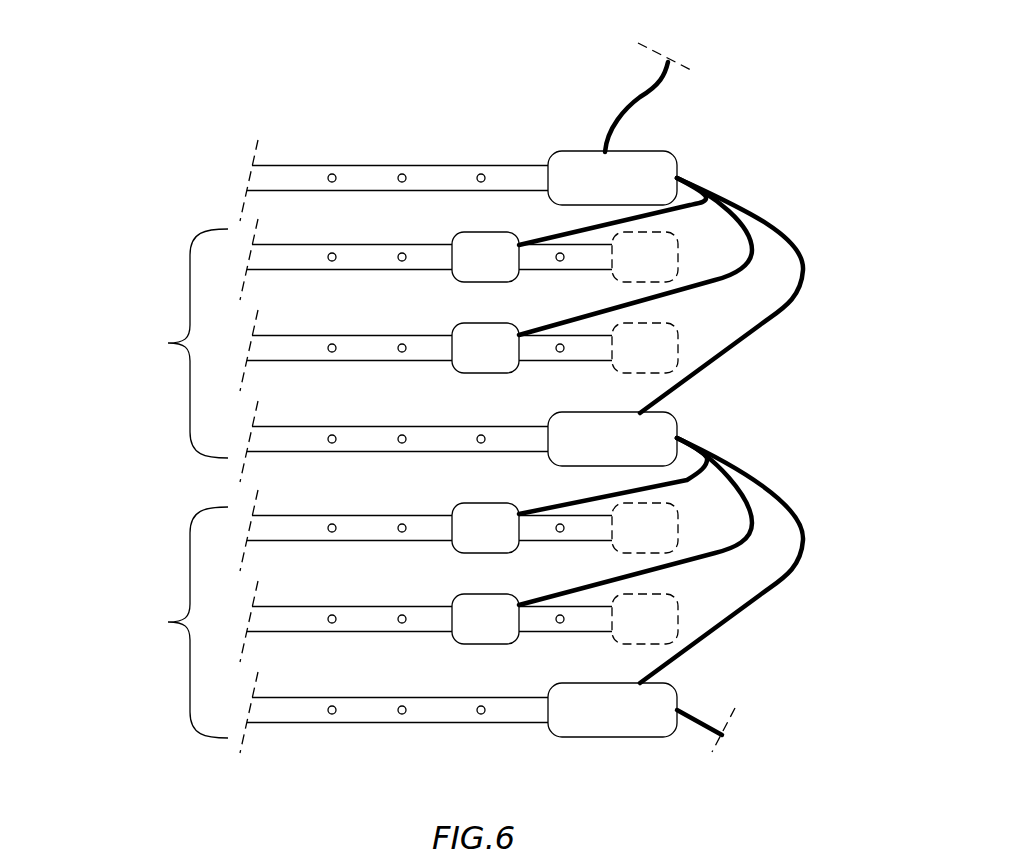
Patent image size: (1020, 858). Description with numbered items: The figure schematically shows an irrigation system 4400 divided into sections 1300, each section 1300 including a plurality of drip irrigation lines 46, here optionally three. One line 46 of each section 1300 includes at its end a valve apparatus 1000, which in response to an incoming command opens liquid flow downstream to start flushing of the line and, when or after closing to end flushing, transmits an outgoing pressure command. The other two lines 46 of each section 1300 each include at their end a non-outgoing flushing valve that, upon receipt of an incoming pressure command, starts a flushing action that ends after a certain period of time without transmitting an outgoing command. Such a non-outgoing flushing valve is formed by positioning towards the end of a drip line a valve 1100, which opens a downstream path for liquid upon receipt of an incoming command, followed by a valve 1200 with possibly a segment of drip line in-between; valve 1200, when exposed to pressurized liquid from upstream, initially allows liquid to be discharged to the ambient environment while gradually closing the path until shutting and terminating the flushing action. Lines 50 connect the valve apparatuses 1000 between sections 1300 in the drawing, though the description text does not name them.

The irrigation system 4400 is at (468, 115).
The drip irrigation lines 46 is at (368, 186).
The valve 1100 is at (483, 232).
The valve 1200 is at (684, 263).
The valve apparatus 1000 is at (679, 141).
The cable / wire 50 is at (724, 204).
The sections 1300 is at (168, 343).